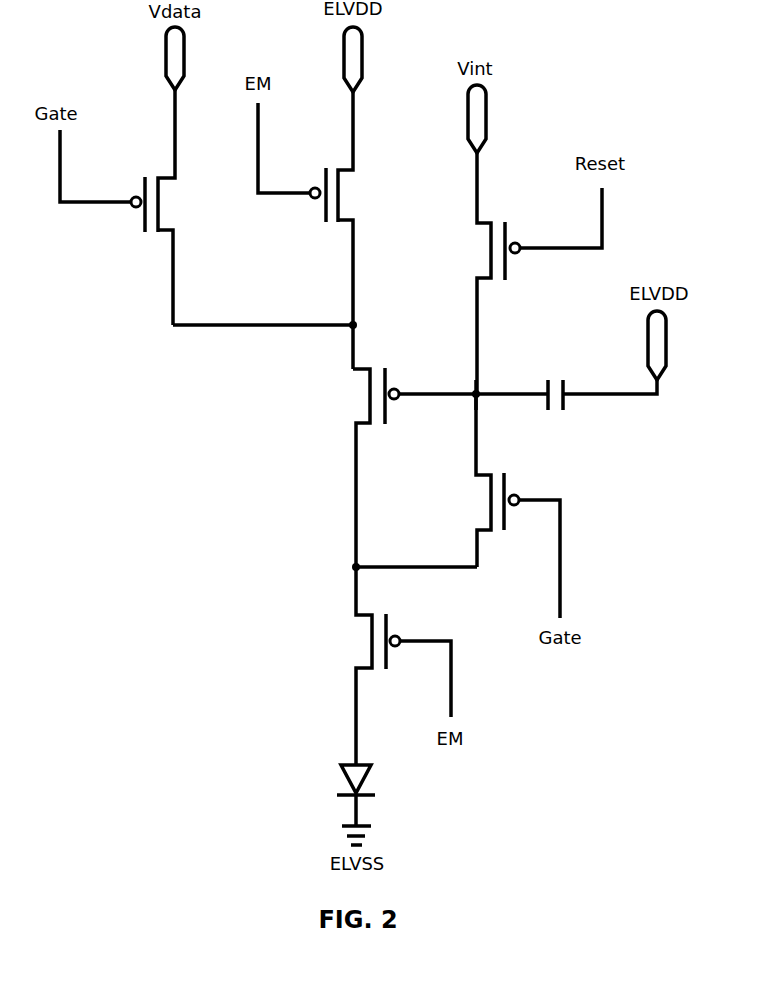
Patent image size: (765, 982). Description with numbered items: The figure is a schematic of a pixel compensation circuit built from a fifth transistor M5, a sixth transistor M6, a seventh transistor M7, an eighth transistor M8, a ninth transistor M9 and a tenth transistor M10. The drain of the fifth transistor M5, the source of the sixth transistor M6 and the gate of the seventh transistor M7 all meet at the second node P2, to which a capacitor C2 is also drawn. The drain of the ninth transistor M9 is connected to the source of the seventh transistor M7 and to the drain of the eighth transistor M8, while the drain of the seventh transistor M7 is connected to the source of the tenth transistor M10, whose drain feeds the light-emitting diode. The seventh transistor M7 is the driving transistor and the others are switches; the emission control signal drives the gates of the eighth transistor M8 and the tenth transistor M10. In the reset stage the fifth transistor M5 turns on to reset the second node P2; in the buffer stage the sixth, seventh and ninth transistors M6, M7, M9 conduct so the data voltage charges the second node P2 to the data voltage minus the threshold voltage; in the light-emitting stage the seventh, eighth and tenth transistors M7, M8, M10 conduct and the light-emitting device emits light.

The fifth transistor M5 is at (524, 273).
The sixth transistor M6 is at (506, 506).
The seventh transistor M7 is at (394, 467).
The eighth transistor M8 is at (320, 208).
The ninth transistor M9 is at (132, 207).
The tenth transistor M10 is at (385, 666).
The second capacitor C2 is at (566, 380).
The second node P2 is at (461, 388).